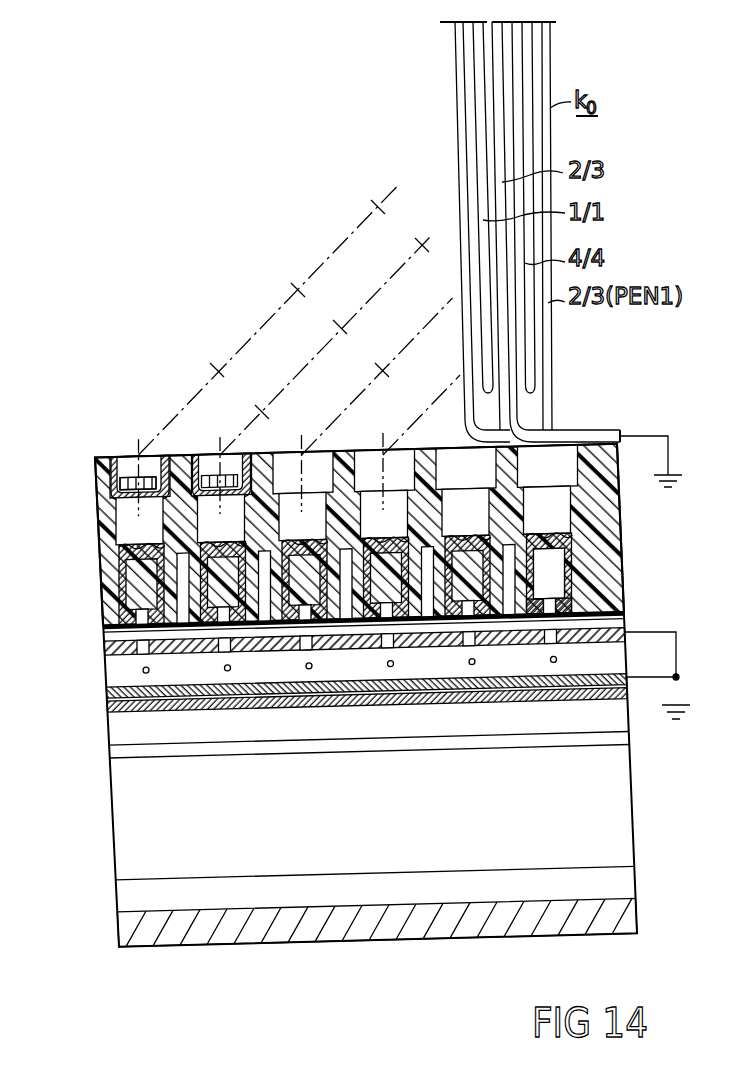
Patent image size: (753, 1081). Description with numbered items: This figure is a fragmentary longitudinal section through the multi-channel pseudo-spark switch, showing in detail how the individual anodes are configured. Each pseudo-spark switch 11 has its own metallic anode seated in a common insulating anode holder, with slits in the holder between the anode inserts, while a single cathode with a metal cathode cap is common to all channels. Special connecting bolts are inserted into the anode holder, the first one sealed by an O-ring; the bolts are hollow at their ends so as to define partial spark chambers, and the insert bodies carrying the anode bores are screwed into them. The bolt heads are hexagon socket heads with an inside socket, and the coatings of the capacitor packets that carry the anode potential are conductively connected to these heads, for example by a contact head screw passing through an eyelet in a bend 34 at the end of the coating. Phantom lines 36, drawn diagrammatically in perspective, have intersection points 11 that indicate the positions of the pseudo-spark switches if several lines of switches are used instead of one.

The pseudo-spark switch 11 is at (298, 288).
The bend 34 is at (598, 432).
The phantom line 36 is at (395, 186).